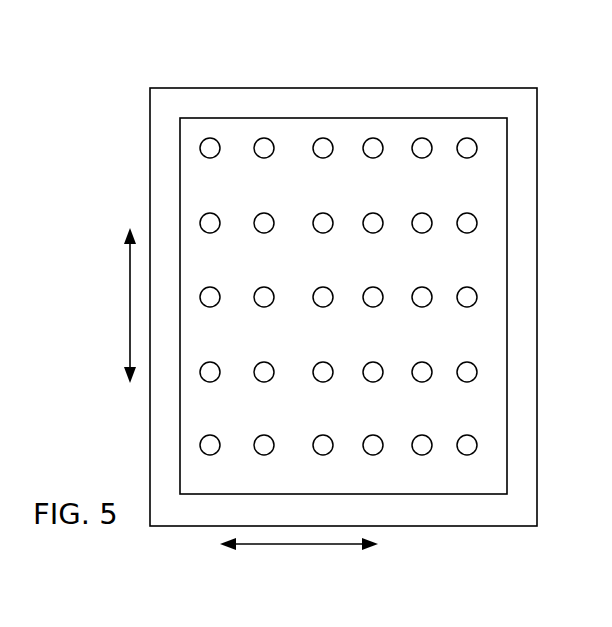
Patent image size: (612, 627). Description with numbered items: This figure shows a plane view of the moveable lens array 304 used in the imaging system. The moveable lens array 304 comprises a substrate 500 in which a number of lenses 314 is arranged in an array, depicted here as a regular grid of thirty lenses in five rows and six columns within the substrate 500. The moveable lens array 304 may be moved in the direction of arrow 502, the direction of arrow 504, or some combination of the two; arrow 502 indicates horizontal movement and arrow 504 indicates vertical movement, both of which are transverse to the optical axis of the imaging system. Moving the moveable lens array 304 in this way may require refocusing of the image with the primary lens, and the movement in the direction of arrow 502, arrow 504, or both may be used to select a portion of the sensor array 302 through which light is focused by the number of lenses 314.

The substrate 500 is at (489, 124).
The sensor array 302 is at (329, 88).
The moveable lens array 304 is at (401, 108).
The number of lenses 314 is at (260, 124).
The arrow 502 is at (297, 546).
The arrow 504 is at (128, 307).